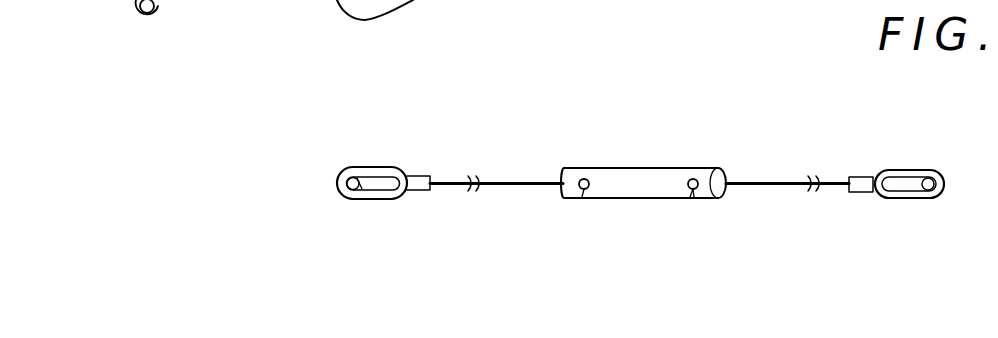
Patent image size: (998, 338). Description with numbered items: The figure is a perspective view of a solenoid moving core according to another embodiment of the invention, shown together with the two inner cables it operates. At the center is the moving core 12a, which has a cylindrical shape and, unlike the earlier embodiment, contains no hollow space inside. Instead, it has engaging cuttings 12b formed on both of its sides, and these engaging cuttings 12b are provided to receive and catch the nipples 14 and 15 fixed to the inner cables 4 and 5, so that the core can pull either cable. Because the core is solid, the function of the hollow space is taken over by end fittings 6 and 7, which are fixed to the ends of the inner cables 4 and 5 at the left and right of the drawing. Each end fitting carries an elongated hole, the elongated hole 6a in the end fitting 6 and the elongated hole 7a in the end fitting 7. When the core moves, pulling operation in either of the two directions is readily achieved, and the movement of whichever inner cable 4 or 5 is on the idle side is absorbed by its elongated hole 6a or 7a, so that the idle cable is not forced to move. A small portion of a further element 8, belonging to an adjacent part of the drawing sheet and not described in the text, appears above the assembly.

The inner cable 4 is at (770, 182).
The inner cable 5 is at (490, 181).
The end fitting 6 is at (908, 200).
The elongated hole 6a is at (904, 182).
The end fitting 7 is at (362, 210).
The elongated hole 7a is at (374, 182).
The link member 8 is at (644, 0).
The moving core 12a is at (626, 169).
The engaging cuttings 12b is at (695, 180).
The nipple 14 is at (694, 190).
The nipple 15 is at (584, 179).